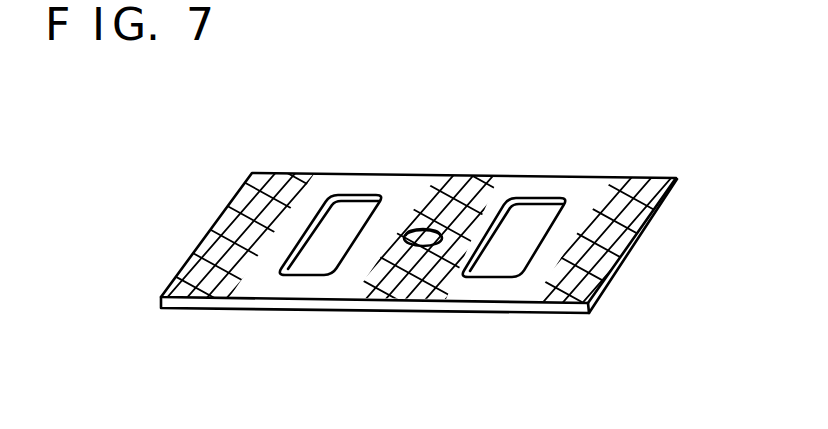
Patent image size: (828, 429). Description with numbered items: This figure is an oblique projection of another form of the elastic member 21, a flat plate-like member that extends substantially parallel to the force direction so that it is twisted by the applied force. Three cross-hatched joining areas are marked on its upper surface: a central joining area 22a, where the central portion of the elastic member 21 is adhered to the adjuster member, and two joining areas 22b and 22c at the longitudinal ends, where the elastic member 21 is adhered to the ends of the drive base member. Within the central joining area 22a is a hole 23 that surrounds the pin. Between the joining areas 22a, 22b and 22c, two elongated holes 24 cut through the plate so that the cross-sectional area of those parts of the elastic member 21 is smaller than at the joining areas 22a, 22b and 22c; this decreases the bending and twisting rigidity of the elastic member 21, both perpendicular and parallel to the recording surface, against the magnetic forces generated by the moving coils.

The elastic member 21 is at (454, 285).
The joining area 22a is at (477, 176).
The joining area 22b is at (293, 173).
The joining area 22c is at (656, 178).
The hole 23 is at (423, 246).
The holes 24 is at (305, 268).